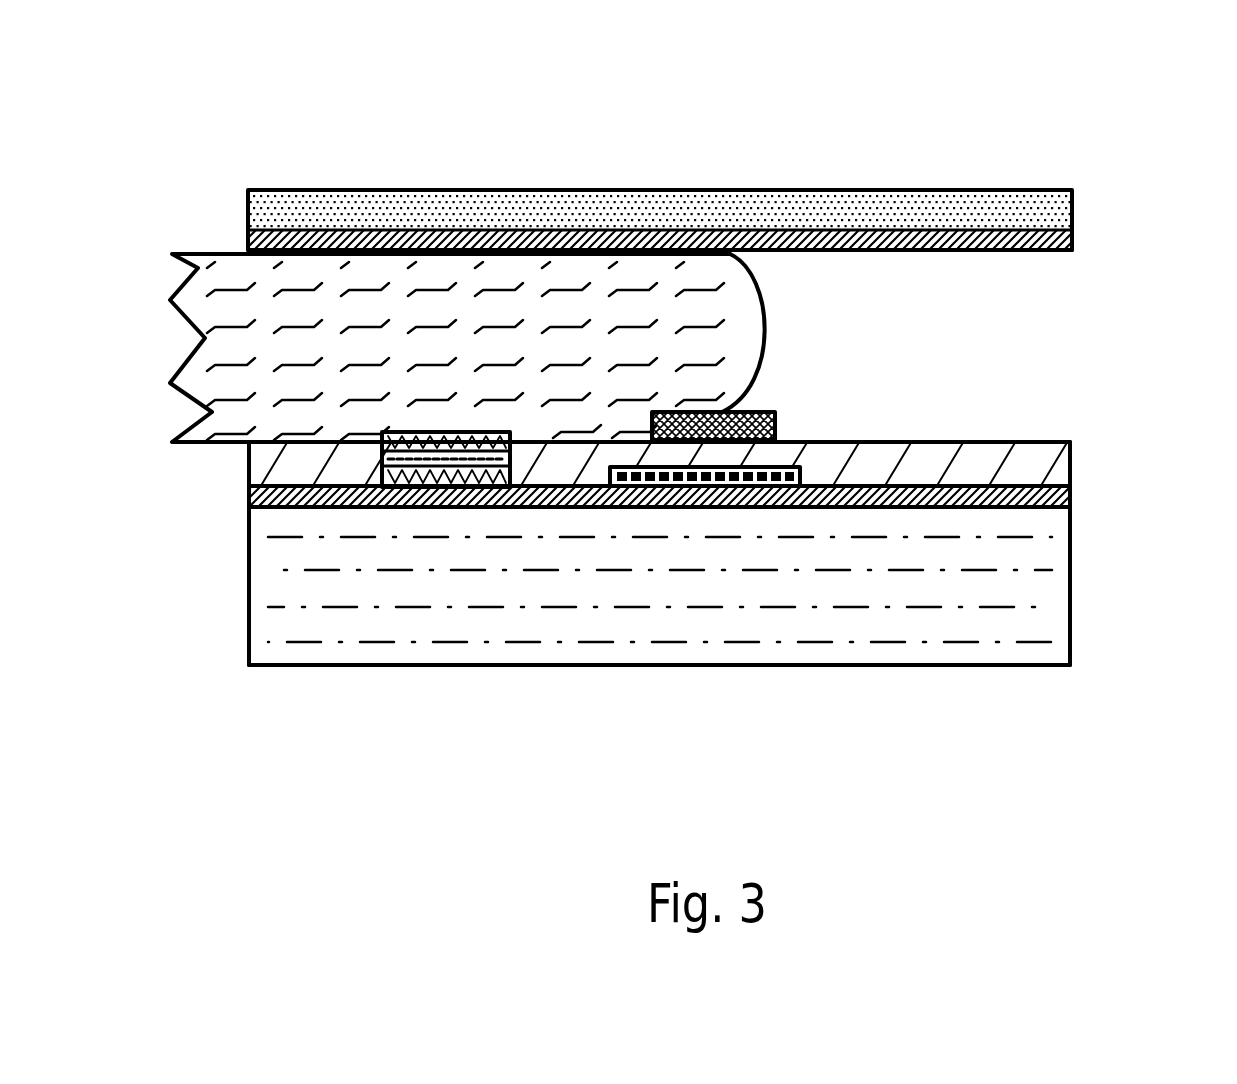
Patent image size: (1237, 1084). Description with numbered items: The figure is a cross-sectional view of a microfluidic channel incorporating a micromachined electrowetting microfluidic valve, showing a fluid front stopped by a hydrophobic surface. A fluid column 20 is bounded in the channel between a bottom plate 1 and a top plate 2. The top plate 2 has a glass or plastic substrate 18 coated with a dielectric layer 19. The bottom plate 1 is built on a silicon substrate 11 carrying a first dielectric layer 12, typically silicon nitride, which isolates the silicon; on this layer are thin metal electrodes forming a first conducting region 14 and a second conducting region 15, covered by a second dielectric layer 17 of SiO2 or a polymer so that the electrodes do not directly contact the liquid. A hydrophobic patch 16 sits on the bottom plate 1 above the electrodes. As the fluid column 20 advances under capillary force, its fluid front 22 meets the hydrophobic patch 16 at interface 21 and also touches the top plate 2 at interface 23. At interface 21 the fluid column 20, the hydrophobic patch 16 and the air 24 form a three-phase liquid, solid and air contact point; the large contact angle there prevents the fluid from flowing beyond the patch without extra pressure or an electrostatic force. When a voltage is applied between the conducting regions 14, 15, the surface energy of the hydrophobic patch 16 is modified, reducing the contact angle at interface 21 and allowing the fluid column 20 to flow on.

The bottom plate 1 is at (930, 610).
The top plate 2 is at (1040, 208).
The silicon substrate 11 is at (295, 627).
The first dielectric layer 12 is at (970, 507).
The first conducting region 14 is at (765, 488).
The second conducting region 15 is at (456, 490).
The hydrophobic patch 16 is at (728, 392).
The second dielectric layer 17 is at (1040, 460).
The glass or plastic substrate 18 is at (330, 196).
The dielectric layer 19 is at (498, 236).
The fluid column 20 is at (230, 296).
The interface 21 is at (732, 388).
The fluid front 22 is at (763, 313).
The interface 23 is at (714, 262).
The air 24 is at (845, 345).